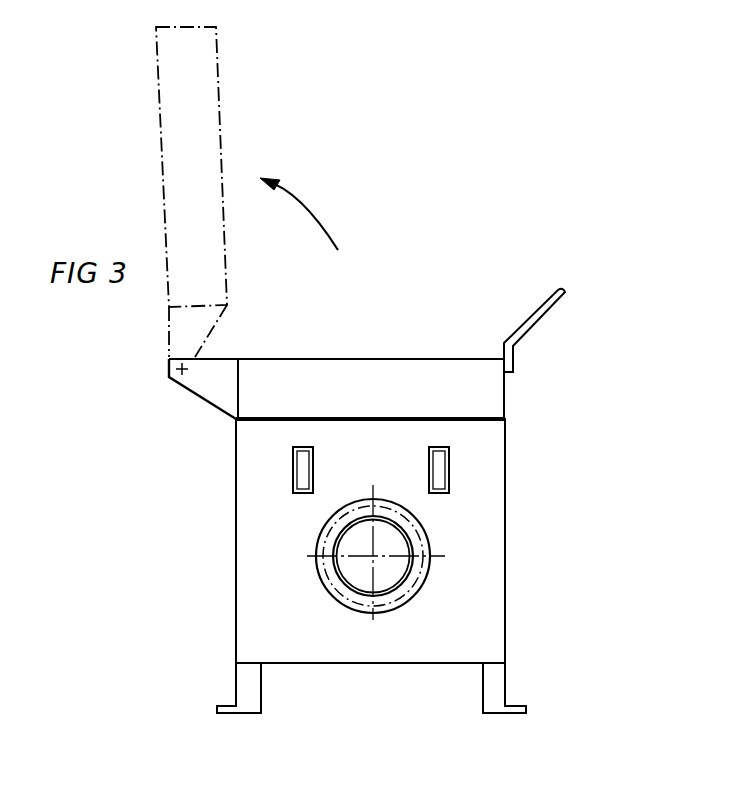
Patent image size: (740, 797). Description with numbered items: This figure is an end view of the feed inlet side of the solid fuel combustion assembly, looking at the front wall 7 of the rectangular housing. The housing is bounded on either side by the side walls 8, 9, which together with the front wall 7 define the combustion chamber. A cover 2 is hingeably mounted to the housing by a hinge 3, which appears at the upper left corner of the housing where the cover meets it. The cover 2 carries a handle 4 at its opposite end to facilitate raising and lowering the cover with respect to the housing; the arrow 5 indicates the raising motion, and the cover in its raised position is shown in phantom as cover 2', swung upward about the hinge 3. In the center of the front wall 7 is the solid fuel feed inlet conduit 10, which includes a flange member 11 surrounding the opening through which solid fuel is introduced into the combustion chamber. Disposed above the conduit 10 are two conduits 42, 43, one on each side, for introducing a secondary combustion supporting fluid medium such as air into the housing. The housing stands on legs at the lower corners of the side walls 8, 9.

The cover 2 is at (336, 358).
The cover in raised position 2' is at (218, 192).
The hinge 3 is at (168, 365).
The handle 4 is at (535, 318).
The arrow 5 is at (315, 212).
The front wall 7 is at (483, 588).
The side wall 8 is at (505, 527).
The side wall 9 is at (236, 528).
The solid fuel feed inlet conduit 10 is at (382, 572).
The flange member 11 is at (358, 607).
The conduit 42 is at (437, 463).
The conduit 43 is at (302, 472).